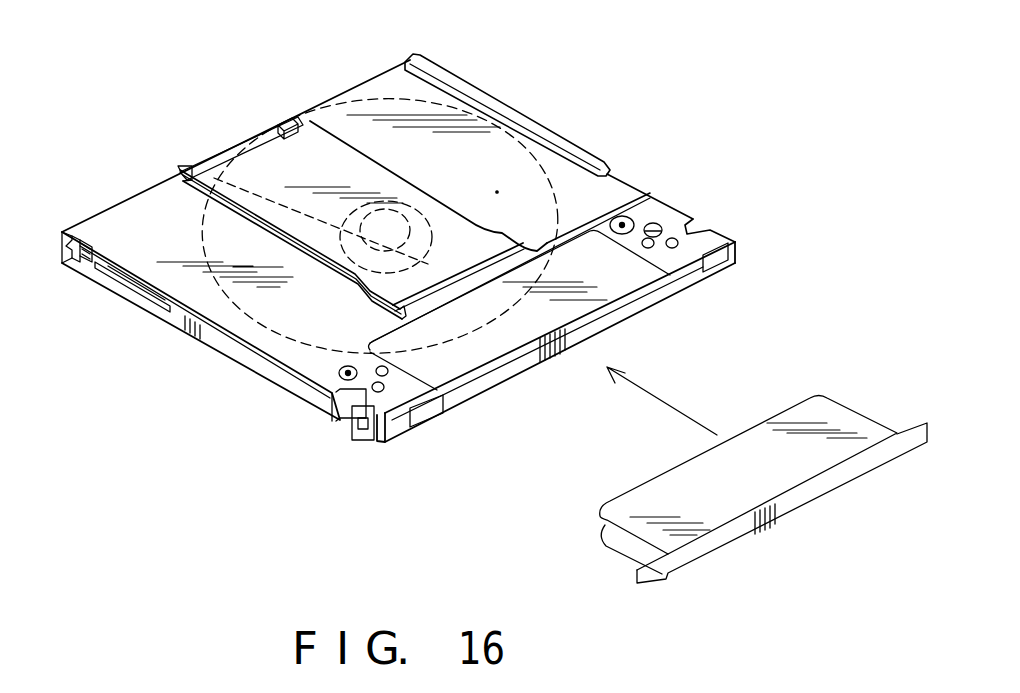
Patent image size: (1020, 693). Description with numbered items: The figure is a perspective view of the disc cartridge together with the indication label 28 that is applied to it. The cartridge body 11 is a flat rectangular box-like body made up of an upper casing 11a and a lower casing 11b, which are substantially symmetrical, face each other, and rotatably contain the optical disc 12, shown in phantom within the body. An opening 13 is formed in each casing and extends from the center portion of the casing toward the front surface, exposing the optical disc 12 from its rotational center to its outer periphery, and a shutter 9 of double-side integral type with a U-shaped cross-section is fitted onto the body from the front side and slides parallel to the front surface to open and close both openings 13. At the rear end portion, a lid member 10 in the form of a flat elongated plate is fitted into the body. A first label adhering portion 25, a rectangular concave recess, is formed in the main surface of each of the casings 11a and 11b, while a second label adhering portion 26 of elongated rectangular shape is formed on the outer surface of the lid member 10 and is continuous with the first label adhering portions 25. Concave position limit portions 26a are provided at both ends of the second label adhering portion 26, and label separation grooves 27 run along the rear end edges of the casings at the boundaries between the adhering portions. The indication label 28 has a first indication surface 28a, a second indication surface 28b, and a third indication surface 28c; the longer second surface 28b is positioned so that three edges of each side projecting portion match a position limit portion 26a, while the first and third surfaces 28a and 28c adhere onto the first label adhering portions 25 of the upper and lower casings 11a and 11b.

The shutter 9 is at (207, 158).
The lid member 10 is at (737, 258).
The cartridge body 11 is at (210, 401).
The upper casing 11a is at (290, 354).
The lower casing 11b is at (313, 394).
The optical disc 12 is at (388, 94).
The opening 13 is at (258, 165).
The first label adhering portion 25 is at (648, 277).
The second label adhering portion 26 is at (573, 341).
The position limit portion 26a is at (428, 414).
The label separation groove 27 is at (478, 357).
The indication label 28 is at (750, 477).
The first indication surface 28a is at (840, 414).
The second indication surface 28b is at (912, 441).
The third indication surface 28c is at (630, 557).